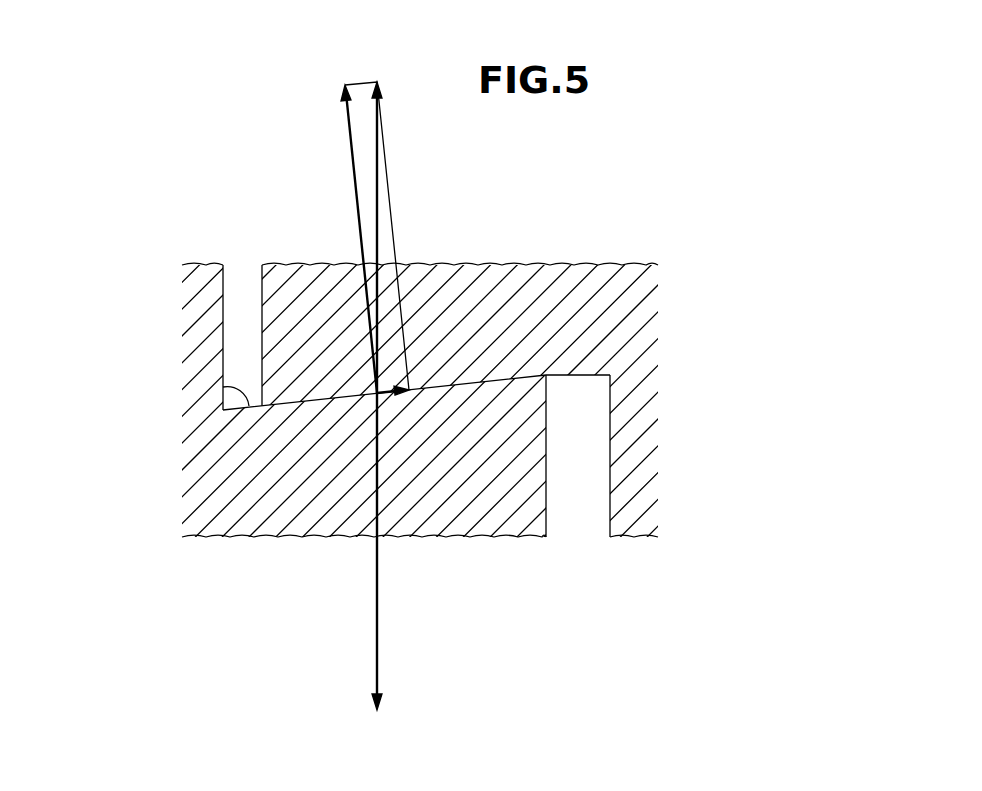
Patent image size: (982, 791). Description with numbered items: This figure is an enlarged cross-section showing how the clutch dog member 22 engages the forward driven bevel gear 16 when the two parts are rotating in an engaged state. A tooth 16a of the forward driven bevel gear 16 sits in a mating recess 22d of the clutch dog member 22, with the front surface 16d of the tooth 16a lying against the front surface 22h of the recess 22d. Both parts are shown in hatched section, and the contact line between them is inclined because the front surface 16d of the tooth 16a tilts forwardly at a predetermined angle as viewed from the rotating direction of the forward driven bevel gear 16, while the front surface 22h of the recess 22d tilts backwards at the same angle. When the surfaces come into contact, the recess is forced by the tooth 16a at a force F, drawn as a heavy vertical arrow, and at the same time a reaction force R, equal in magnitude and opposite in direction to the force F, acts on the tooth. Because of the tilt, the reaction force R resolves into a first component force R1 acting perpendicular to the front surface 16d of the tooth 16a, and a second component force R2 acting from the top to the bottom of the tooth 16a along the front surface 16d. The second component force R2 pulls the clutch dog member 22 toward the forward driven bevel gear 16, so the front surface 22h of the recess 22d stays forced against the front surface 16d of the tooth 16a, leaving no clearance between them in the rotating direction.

The clutch dog member 22 is at (181, 345).
The recess 22d is at (227, 290).
The front surface of the recess 22h is at (222, 392).
The forward driven bevel gear 16 is at (660, 345).
The tooth 16a is at (530, 260).
The front surface of the tooth 16d is at (563, 376).
The reaction force R is at (379, 186).
The first component force R1 is at (354, 193).
The second component force R2 is at (383, 400).
The force F is at (378, 628).